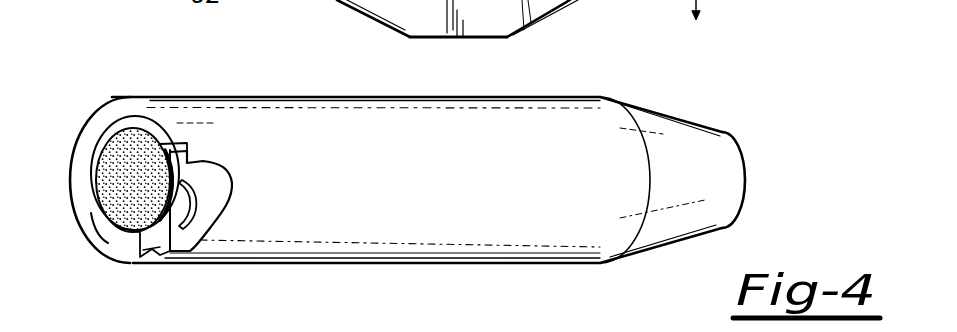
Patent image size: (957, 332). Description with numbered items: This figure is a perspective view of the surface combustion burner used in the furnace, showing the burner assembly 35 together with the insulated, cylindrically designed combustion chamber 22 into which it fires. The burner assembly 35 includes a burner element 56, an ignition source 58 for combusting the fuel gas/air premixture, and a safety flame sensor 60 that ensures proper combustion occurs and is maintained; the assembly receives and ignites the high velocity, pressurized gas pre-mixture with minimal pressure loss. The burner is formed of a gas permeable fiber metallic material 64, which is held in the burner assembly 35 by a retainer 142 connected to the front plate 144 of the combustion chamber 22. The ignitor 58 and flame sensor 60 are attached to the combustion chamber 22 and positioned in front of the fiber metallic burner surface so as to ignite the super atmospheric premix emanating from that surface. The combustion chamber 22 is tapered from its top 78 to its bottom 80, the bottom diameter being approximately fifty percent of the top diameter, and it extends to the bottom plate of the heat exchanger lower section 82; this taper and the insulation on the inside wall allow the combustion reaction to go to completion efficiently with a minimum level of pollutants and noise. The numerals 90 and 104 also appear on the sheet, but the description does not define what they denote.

The combustion chamber 22 is at (447, 217).
The burner assembly 35 is at (160, 118).
The burner element 56 is at (140, 208).
The ignition source 58 is at (170, 243).
The safety flame sensor 60 is at (190, 226).
The gas permeable fiber metallic material 64 is at (138, 152).
The top of combustion chamber 78 is at (248, 120).
The bottom of combustion chamber 80 is at (724, 176).
The heat exchanger lower section 82 is at (357, 2).
The side wall (upper figure) 90 is at (530, 0).
The direction arrow (upper figure) 104 is at (620, 0).
The retainer 142 is at (107, 137).
The front plate 144 is at (106, 244).